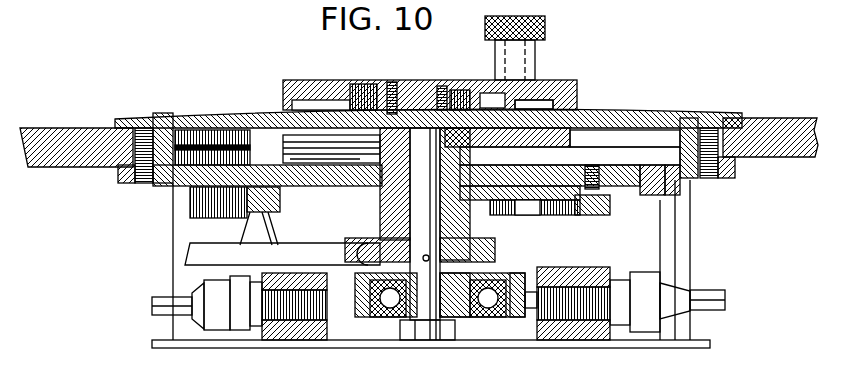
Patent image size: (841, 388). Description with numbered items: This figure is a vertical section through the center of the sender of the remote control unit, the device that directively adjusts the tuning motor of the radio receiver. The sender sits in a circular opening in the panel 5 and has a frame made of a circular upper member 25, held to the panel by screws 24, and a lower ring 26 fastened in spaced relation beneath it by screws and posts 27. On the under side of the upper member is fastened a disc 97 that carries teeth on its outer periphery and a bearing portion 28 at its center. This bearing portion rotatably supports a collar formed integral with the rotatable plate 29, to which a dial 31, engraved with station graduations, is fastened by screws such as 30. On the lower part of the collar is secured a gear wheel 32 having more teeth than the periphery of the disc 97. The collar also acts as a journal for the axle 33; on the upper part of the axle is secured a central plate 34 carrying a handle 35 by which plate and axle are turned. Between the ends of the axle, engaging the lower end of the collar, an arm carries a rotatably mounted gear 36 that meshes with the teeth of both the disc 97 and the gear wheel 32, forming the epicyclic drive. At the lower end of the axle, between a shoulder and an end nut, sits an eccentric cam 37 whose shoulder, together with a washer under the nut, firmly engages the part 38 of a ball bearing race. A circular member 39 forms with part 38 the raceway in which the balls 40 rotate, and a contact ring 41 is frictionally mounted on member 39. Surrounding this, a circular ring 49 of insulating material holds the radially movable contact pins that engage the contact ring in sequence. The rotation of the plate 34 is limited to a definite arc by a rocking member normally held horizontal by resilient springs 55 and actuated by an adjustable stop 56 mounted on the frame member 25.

The panel 5 is at (792, 118).
The screws 24 is at (145, 184).
The circular upper member 25 is at (691, 181).
The lower ring 26 is at (702, 346).
The posts 27 is at (173, 266).
The bearing portion 28 is at (478, 154).
The rotatable plate 29 is at (575, 138).
The screws 30 is at (552, 118).
The dial 31 is at (681, 110).
The gear wheel 32 is at (262, 216).
The axle 33 is at (420, 234).
The central plate 34 is at (368, 86).
The handle 35 is at (282, 254).
The gear 36 is at (190, 215).
The eccentric cam 37 is at (452, 306).
The ball bearing race part 38 is at (487, 316).
The circular race member 39 is at (508, 316).
The balls 40 is at (392, 310).
The contact ring 41 is at (352, 322).
The circular ring of insulating material 49 is at (592, 270).
The resilient springs 55 is at (522, 16).
The adjustable stop 56 is at (248, 128).
The disc 97 is at (540, 215).